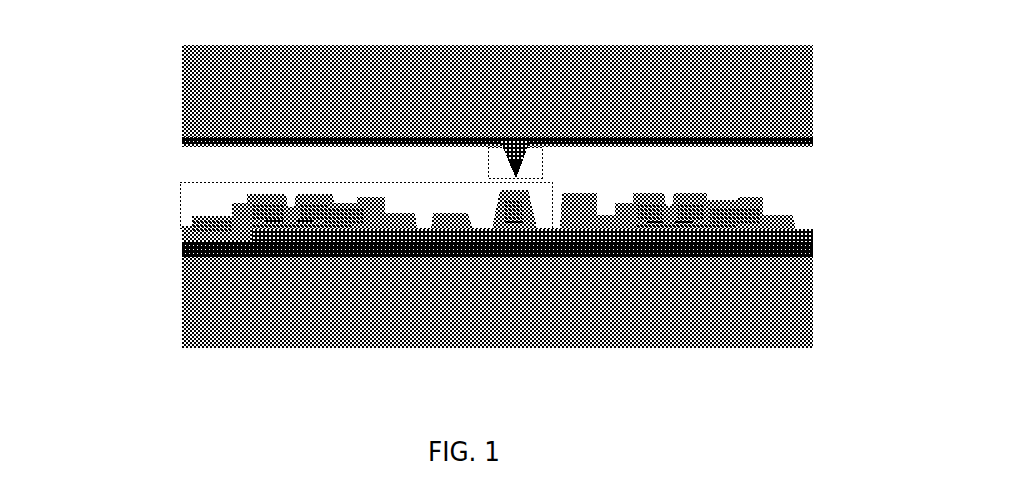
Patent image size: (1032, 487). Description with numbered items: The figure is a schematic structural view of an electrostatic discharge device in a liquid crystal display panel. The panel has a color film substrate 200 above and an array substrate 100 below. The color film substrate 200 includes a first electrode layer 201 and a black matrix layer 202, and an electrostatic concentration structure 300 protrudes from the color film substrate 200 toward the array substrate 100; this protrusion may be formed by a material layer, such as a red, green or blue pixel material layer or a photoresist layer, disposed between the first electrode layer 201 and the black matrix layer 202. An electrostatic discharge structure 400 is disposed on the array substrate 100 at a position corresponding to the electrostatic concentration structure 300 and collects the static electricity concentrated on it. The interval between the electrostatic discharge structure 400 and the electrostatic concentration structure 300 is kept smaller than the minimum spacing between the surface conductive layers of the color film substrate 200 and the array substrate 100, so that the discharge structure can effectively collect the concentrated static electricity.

The array substrate 100 is at (148, 296).
The color film substrate 200 is at (142, 97).
The first electrode layer 201 is at (198, 148).
The black matrix layer 202 is at (817, 148).
The electrostatic concentration structure 300 is at (557, 138).
The electrostatic discharge structure 400 is at (427, 287).